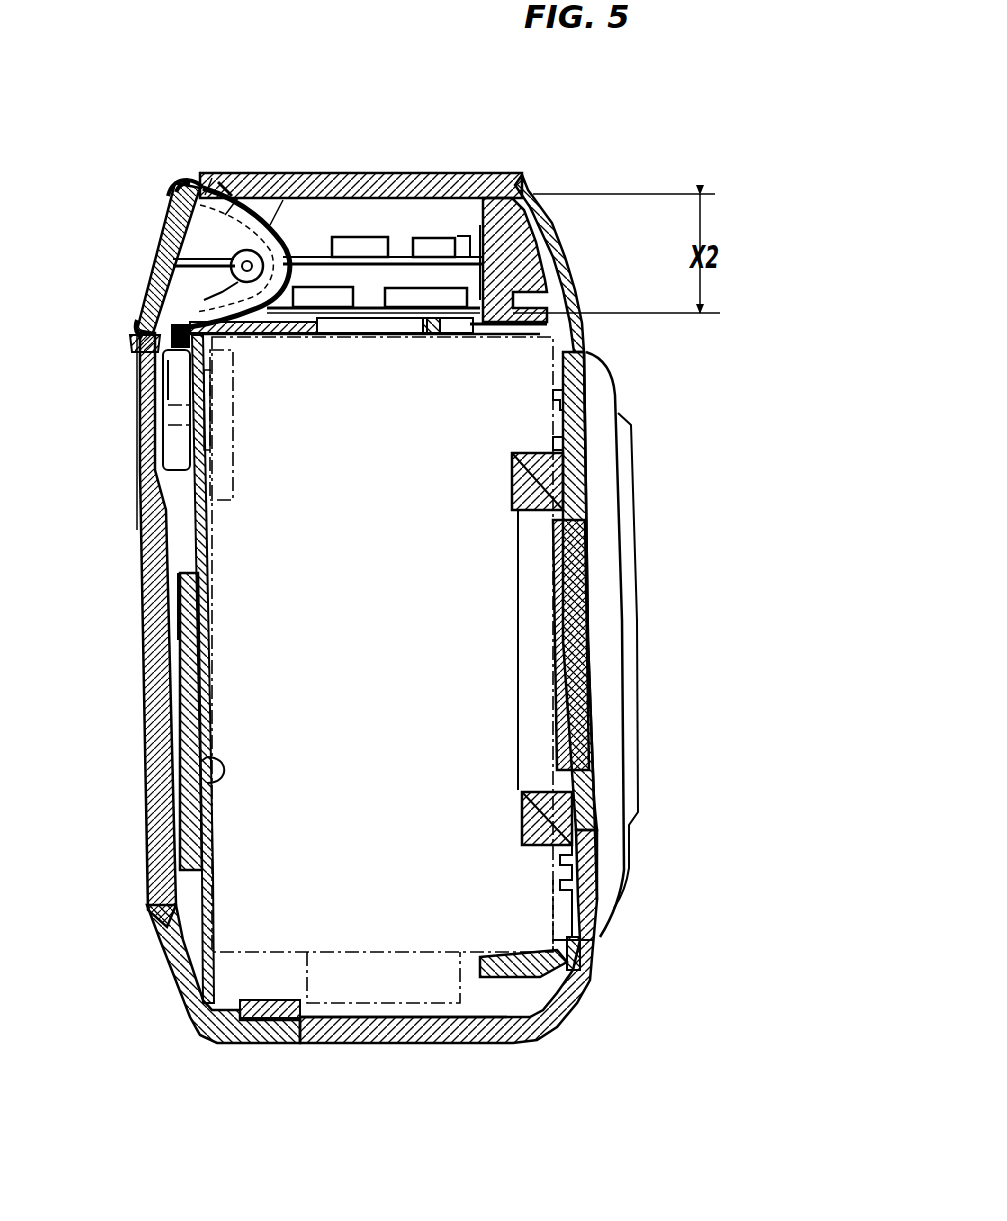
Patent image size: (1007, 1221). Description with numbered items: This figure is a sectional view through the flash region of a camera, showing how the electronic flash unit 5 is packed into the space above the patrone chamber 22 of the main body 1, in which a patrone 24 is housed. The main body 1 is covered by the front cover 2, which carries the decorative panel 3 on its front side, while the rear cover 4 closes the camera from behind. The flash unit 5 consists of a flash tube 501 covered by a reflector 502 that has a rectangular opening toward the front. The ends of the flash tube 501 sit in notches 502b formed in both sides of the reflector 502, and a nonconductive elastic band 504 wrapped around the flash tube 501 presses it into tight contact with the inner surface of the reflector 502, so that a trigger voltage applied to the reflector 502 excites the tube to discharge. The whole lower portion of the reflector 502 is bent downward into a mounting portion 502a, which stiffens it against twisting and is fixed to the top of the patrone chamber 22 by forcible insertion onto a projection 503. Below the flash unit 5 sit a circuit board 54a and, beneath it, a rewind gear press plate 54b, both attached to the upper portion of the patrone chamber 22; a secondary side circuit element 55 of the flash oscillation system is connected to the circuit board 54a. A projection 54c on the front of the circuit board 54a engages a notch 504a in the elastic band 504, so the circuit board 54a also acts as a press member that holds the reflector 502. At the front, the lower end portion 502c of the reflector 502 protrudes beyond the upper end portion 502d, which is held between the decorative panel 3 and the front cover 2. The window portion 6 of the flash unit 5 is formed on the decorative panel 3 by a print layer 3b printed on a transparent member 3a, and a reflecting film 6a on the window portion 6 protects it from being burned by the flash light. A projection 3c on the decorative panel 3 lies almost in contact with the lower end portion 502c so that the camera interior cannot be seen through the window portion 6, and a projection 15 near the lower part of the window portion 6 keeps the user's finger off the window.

The main body 1 is at (200, 670).
The front cover 2 is at (432, 183).
The decorative panel 3 is at (150, 572).
The transparent member 3a is at (155, 520).
The print layer 3b is at (150, 615).
The projection 3c is at (133, 341).
The rear cover 4 is at (570, 386).
The electronic flash unit 5 is at (222, 268).
The window portion 6 is at (142, 288).
The reflecting film 6a is at (172, 235).
The projection 15 is at (133, 348).
The patrone chamber 22 is at (215, 783).
The patrone 24 is at (580, 955).
The circuit board 54a is at (467, 258).
The rewind gear press plate 54b is at (375, 303).
The projection 54c is at (325, 243).
The secondary side circuit element 55 is at (364, 243).
The flash tube 501 is at (258, 248).
The reflector 502 is at (236, 180).
The mounting portion 502a is at (140, 396).
The notches 502b is at (224, 180).
The lower end portion 502c is at (218, 283).
The upper end portion 502d is at (182, 184).
The projection 503 is at (140, 367).
The elastic band 504 is at (276, 172).
The notch 504a is at (300, 245).